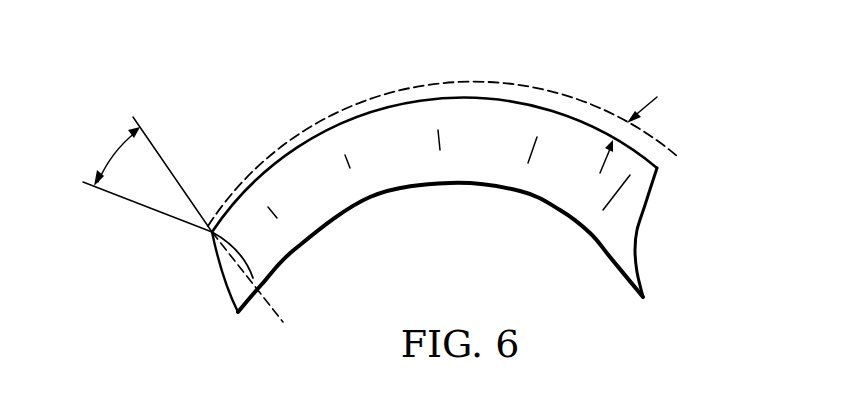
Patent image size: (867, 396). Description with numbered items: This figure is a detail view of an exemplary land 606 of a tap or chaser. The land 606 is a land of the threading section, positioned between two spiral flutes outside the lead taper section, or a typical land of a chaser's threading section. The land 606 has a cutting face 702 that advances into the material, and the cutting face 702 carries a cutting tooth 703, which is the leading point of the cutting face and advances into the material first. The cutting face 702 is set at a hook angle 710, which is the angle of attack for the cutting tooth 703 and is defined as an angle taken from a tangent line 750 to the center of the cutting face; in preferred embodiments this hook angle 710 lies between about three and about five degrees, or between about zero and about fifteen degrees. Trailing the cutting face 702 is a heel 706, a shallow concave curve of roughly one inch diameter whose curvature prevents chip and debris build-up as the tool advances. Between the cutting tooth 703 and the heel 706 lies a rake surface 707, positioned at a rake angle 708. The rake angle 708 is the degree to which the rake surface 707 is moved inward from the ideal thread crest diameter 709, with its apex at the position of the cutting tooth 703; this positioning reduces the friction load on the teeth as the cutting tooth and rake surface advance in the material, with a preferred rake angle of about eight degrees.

The land 606 is at (207, 52).
The cutting face 702 is at (247, 258).
The cutting tooth 703 is at (205, 237).
The heel 706 is at (638, 227).
The rake surface 707 is at (368, 112).
The rake angle 708 is at (639, 112).
The ideal thread crest diameter 709 is at (470, 80).
The hook angle 710 is at (110, 148).
The tangent line 750 is at (273, 304).